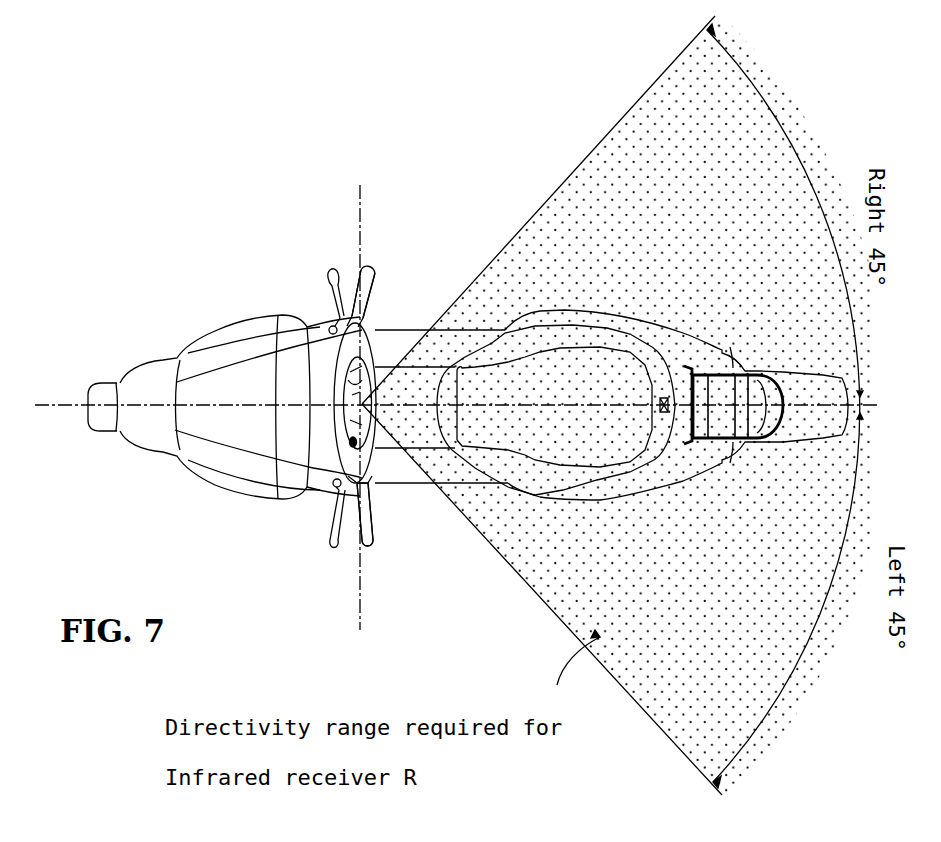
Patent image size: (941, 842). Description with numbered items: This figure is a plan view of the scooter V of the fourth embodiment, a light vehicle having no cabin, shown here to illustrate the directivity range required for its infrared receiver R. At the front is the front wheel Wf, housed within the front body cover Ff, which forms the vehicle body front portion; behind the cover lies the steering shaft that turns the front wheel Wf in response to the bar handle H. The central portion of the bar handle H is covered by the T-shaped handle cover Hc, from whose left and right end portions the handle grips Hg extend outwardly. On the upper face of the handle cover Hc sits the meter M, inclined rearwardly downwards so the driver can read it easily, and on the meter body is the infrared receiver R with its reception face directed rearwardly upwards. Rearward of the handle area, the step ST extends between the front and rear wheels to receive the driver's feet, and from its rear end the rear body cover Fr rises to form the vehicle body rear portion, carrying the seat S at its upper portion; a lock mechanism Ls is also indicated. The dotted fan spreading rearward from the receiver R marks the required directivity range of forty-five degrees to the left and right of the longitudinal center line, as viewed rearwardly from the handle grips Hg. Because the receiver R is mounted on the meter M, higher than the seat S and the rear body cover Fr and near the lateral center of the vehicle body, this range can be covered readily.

The front wheel Wf is at (102, 384).
The front body cover Ff is at (215, 352).
The handle cover Hc is at (322, 343).
The bar handle H is at (354, 268).
The handle grips Hg is at (377, 292).
The meter M is at (378, 358).
The infrared receiver R is at (360, 447).
The step ST is at (445, 343).
The scooter V is at (579, 294).
The seat S is at (535, 455).
The rear body cover Fr is at (683, 333).
The lock mechanism Ls is at (656, 403).